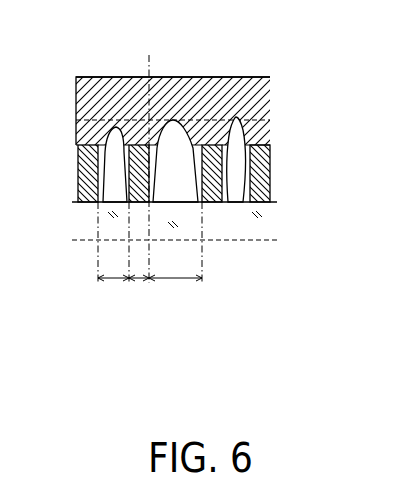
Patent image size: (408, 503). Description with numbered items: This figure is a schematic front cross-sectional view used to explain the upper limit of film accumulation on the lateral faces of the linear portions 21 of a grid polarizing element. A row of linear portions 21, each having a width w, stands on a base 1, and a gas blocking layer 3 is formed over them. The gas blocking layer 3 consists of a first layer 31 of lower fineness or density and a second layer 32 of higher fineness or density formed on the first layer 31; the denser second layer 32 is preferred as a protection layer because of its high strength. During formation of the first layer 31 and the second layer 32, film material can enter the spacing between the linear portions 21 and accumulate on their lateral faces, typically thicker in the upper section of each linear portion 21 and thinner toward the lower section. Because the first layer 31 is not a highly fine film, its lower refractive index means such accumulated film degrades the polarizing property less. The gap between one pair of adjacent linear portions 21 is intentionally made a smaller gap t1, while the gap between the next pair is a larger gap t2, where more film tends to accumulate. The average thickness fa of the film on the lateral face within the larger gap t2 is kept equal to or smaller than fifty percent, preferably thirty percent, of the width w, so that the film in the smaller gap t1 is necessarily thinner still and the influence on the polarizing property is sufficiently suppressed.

The substrate 1 is at (87, 231).
The gas blocking layer 3 is at (326, 88).
The linear portion 21 is at (98, 183).
The first layer 31 is at (262, 132).
The second layer 32 is at (262, 99).
The average thickness of the film fa is at (158, 54).
The gap t1 is at (112, 285).
The gap t2 is at (171, 283).
The width of the linear portion w is at (138, 283).